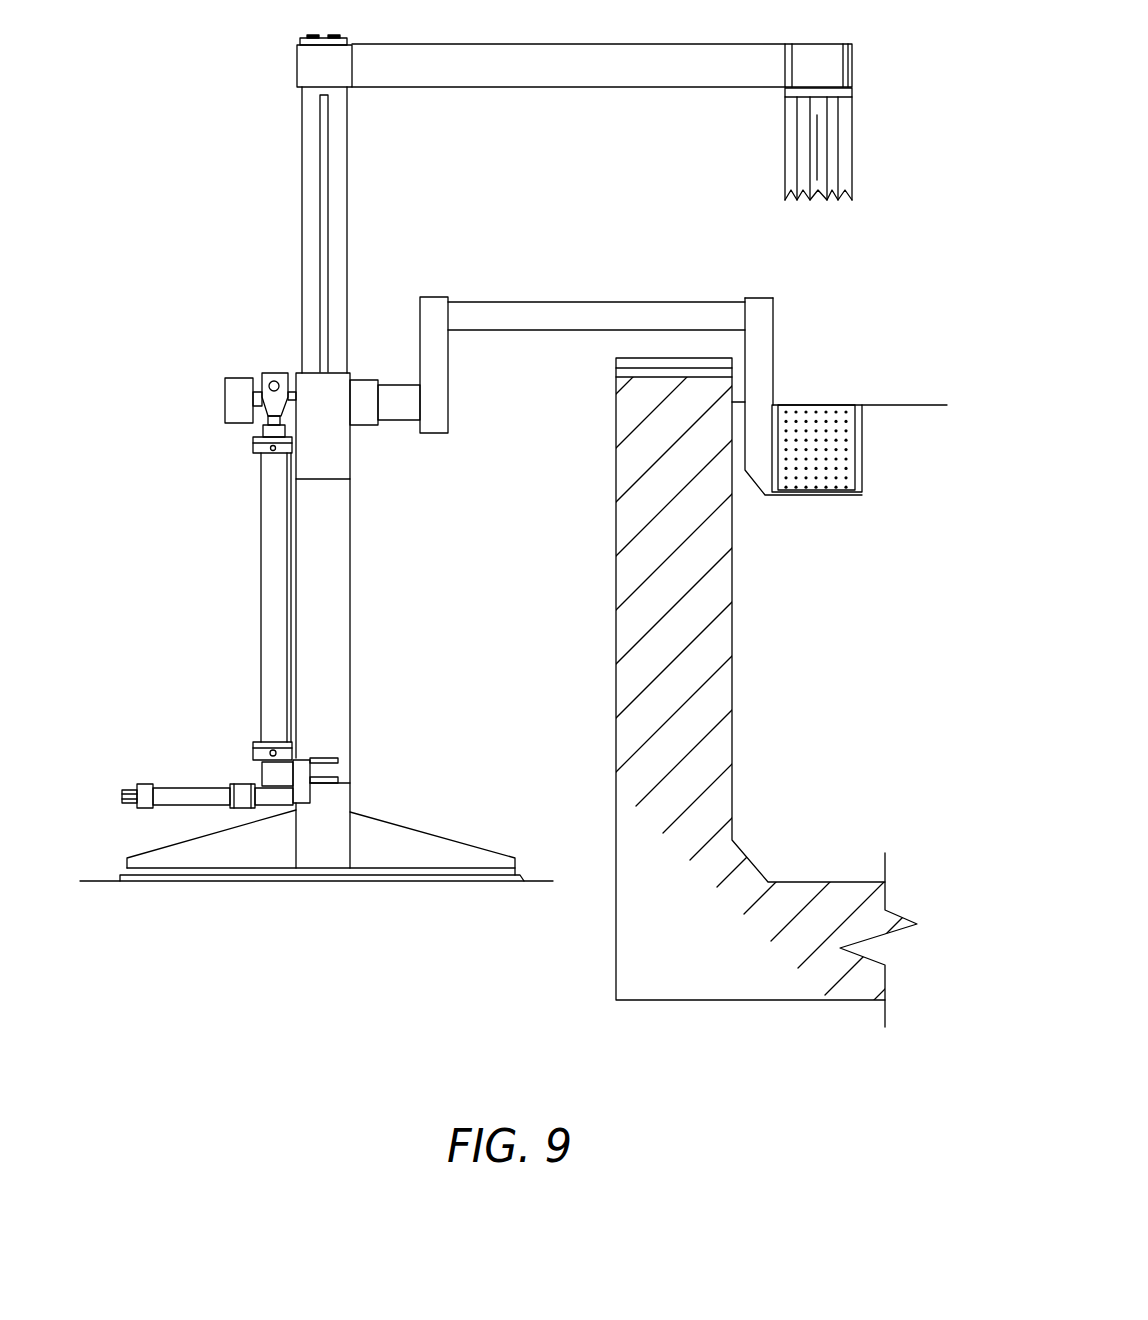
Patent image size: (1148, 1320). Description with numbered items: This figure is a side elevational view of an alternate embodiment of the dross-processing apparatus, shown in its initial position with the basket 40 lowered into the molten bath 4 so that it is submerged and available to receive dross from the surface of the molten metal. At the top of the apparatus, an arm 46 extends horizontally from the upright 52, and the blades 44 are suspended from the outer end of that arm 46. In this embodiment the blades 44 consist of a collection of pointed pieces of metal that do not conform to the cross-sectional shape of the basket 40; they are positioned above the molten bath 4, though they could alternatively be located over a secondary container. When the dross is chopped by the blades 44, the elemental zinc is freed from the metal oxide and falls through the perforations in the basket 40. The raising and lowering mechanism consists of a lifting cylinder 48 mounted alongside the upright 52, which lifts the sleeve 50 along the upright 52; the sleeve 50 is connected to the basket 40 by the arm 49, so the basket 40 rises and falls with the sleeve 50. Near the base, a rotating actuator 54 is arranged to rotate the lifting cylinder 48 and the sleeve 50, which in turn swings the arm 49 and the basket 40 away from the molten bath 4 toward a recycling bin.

The molten bath 4 is at (876, 727).
The basket 40 is at (862, 452).
The blades 44 is at (833, 168).
The arm 46 is at (470, 75).
The lifting cylinder 48 is at (262, 667).
The arm 49 is at (532, 313).
The sleeve 50 is at (330, 437).
The upright 52 is at (340, 328).
The rotating actuator 54 is at (143, 783).